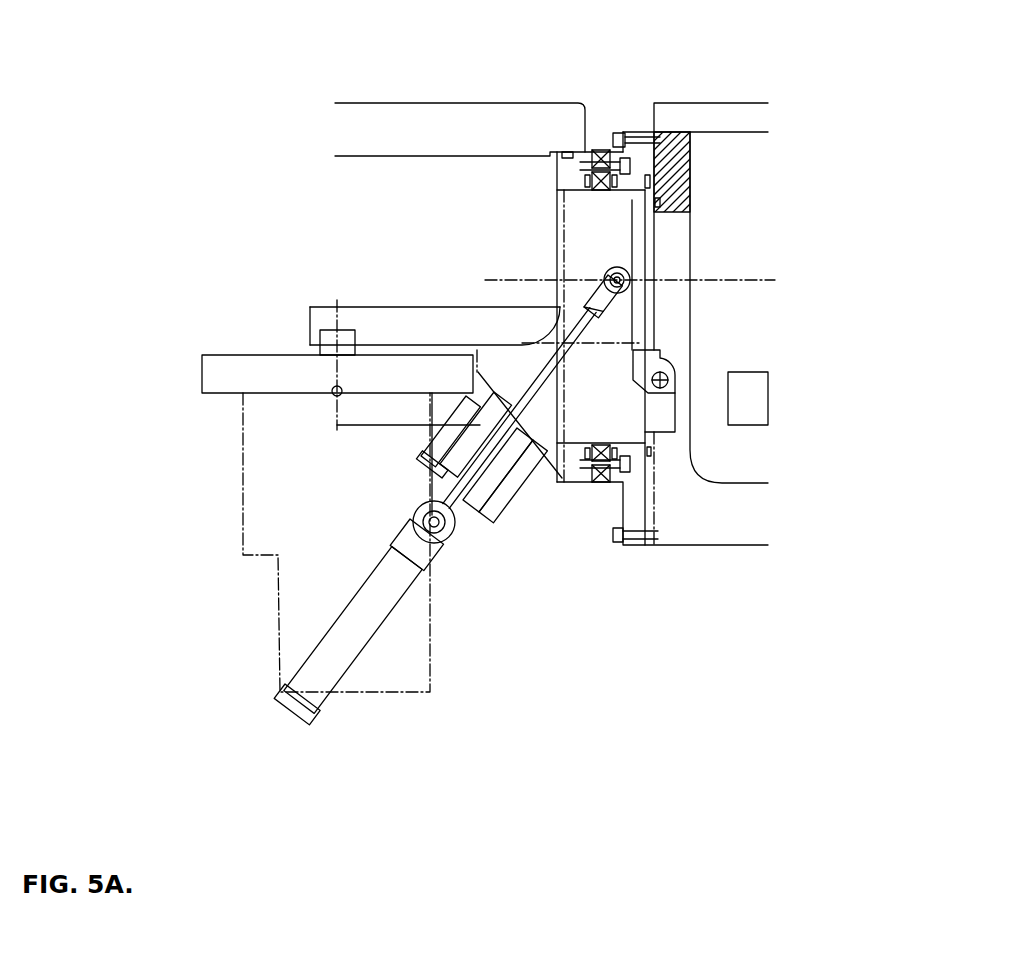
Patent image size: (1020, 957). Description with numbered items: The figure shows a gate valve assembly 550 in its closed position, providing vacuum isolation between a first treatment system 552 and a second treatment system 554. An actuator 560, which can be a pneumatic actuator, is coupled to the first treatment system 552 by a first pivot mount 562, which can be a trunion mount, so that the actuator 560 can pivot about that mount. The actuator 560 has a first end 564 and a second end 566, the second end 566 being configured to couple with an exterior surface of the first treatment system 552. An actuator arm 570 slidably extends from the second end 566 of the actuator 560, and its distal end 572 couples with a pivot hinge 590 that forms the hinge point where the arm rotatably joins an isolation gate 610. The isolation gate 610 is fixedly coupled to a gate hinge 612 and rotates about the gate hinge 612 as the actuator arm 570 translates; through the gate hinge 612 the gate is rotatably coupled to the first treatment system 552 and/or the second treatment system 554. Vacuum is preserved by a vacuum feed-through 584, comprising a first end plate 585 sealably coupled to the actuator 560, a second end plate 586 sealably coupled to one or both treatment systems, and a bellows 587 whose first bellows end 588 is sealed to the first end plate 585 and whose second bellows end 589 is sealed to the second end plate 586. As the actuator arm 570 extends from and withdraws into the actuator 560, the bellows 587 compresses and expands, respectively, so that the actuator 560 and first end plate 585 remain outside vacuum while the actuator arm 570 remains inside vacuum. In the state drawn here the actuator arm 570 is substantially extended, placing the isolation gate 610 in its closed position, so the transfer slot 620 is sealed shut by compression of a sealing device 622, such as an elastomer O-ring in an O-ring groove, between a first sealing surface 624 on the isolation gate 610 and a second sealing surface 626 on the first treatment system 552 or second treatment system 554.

The gate valve assembly 550 is at (443, 707).
The first treatment system 552 is at (486, 98).
The second treatment system 554 is at (722, 100).
The actuator 560 is at (308, 700).
The first pivot mount 562 is at (423, 518).
The first end 564 is at (285, 712).
The second end 566 is at (427, 563).
The actuator arm 570 is at (556, 357).
The distal end 572 is at (594, 300).
The vacuum feed-through 584 is at (367, 472).
The first end plate 585 is at (437, 477).
The second end plate 586 is at (476, 418).
The bellows 587 is at (422, 455).
The first bellows end 588 is at (432, 465).
The second bellows end 589 is at (445, 450).
The pivot hinge 590 is at (607, 272).
The isolation gate 610 is at (660, 257).
The gate hinge 612 is at (676, 378).
The transfer slot 620 is at (680, 228).
The sealing device 622 is at (678, 187).
The first sealing surface 624 is at (660, 283).
The second sealing surface 626 is at (637, 350).